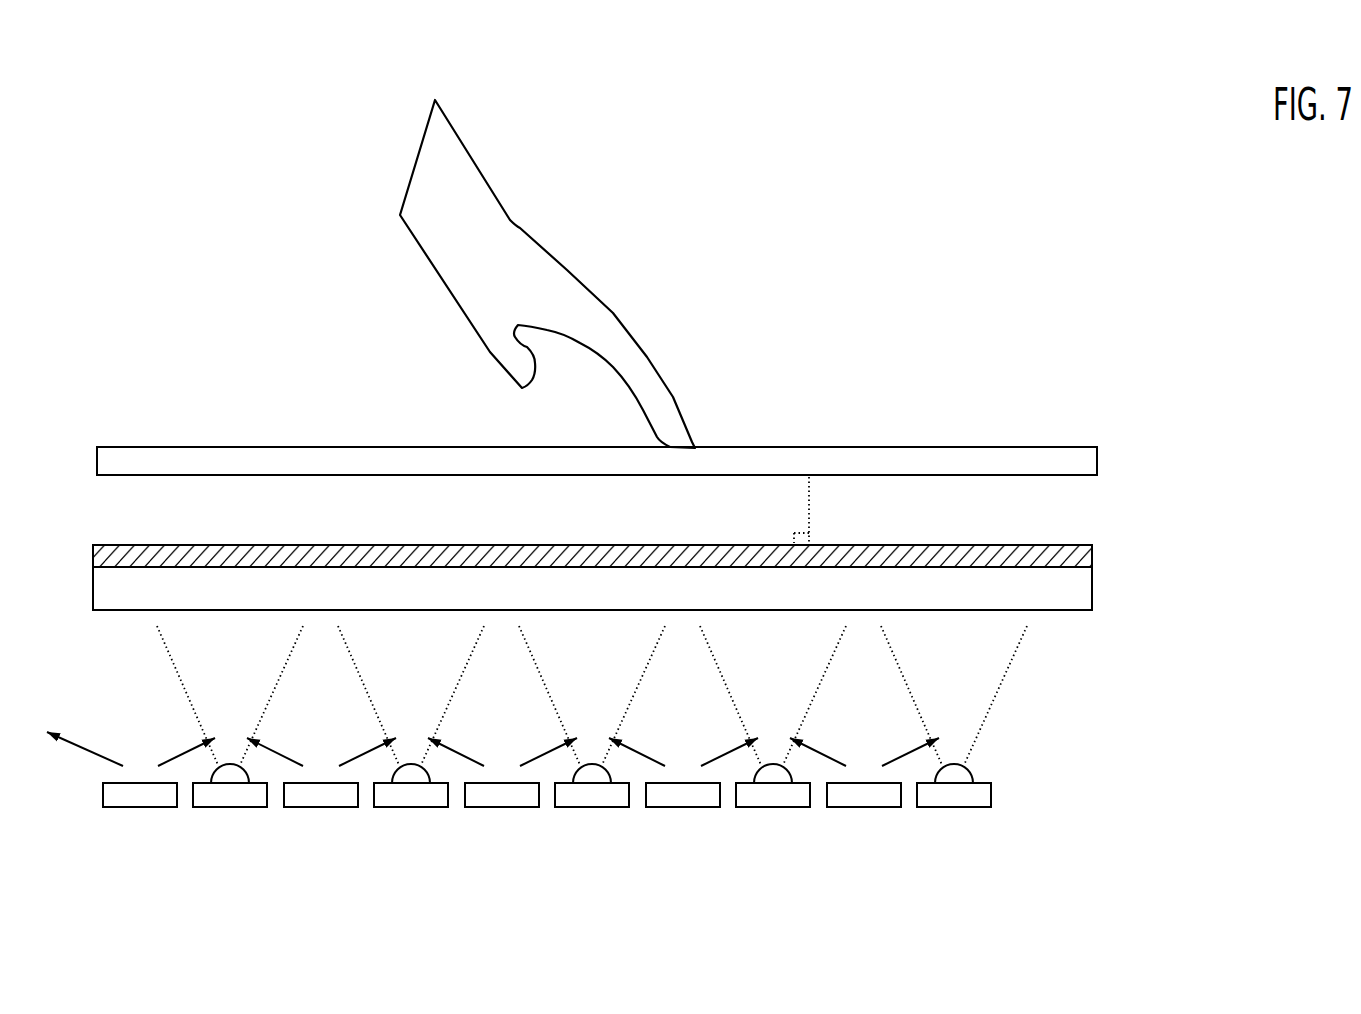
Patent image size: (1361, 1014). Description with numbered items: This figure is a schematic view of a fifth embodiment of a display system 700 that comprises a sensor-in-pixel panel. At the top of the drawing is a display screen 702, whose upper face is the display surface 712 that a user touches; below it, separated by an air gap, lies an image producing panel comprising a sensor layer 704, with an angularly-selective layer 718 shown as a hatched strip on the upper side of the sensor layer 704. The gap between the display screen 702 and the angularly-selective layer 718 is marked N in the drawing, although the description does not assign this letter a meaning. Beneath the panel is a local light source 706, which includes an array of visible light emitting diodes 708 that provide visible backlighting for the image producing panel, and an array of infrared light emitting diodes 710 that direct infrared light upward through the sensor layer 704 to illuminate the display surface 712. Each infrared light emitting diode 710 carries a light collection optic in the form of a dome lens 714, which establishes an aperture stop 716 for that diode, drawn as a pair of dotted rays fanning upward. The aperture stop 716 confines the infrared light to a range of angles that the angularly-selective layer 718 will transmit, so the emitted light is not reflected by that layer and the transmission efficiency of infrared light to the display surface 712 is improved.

The display system 700 is at (1038, 197).
The display screen 702 is at (1097, 455).
The sensor layer 704 is at (1092, 600).
The local light source 706 is at (1170, 787).
The visible light emitting diodes 708 is at (680, 810).
The infrared light emitting diodes 710 is at (778, 810).
The display surface 712 is at (847, 445).
The dome lens 714 is at (967, 772).
The aperture stop 716 is at (1020, 681).
The angularly-selective layer 718 is at (1092, 552).
The gap distance N is at (827, 500).